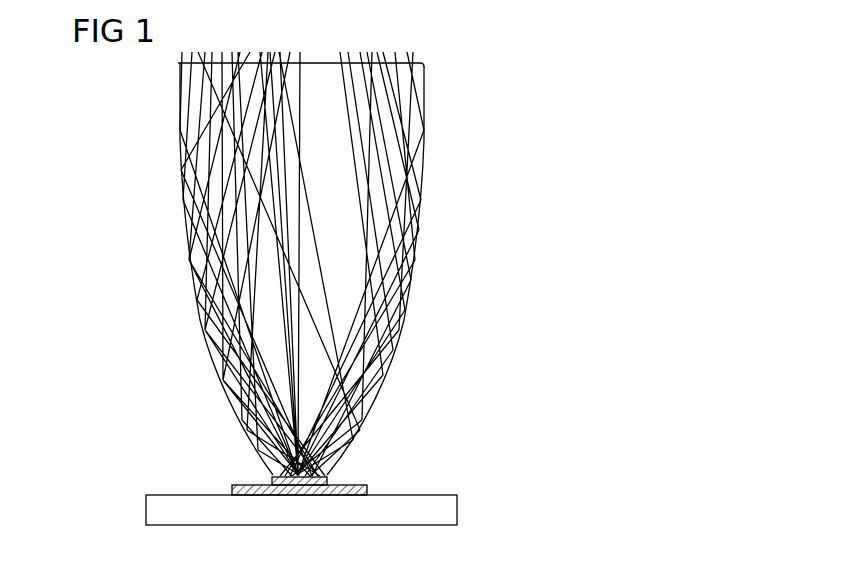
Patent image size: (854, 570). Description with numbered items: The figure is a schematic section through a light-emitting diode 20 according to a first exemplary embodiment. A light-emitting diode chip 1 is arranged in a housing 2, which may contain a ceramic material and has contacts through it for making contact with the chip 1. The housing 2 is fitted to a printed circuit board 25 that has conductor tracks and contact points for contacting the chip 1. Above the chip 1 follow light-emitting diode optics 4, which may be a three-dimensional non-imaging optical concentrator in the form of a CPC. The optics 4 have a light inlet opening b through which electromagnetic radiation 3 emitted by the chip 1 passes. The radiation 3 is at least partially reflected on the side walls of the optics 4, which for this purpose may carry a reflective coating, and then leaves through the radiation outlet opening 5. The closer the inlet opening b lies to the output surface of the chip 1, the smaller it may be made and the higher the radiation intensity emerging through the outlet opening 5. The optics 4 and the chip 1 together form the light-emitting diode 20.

The light-emitting diode chip 1 is at (270, 480).
The housing 2 is at (363, 486).
The electromagnetic radiation 3 is at (318, 248).
The light-emitting diode optics 4 is at (422, 202).
The radiation outlet opening 5 is at (425, 72).
The light-emitting diode 20 is at (347, 264).
The printed circuit board 25 is at (455, 513).
The light inlet opening b is at (325, 470).